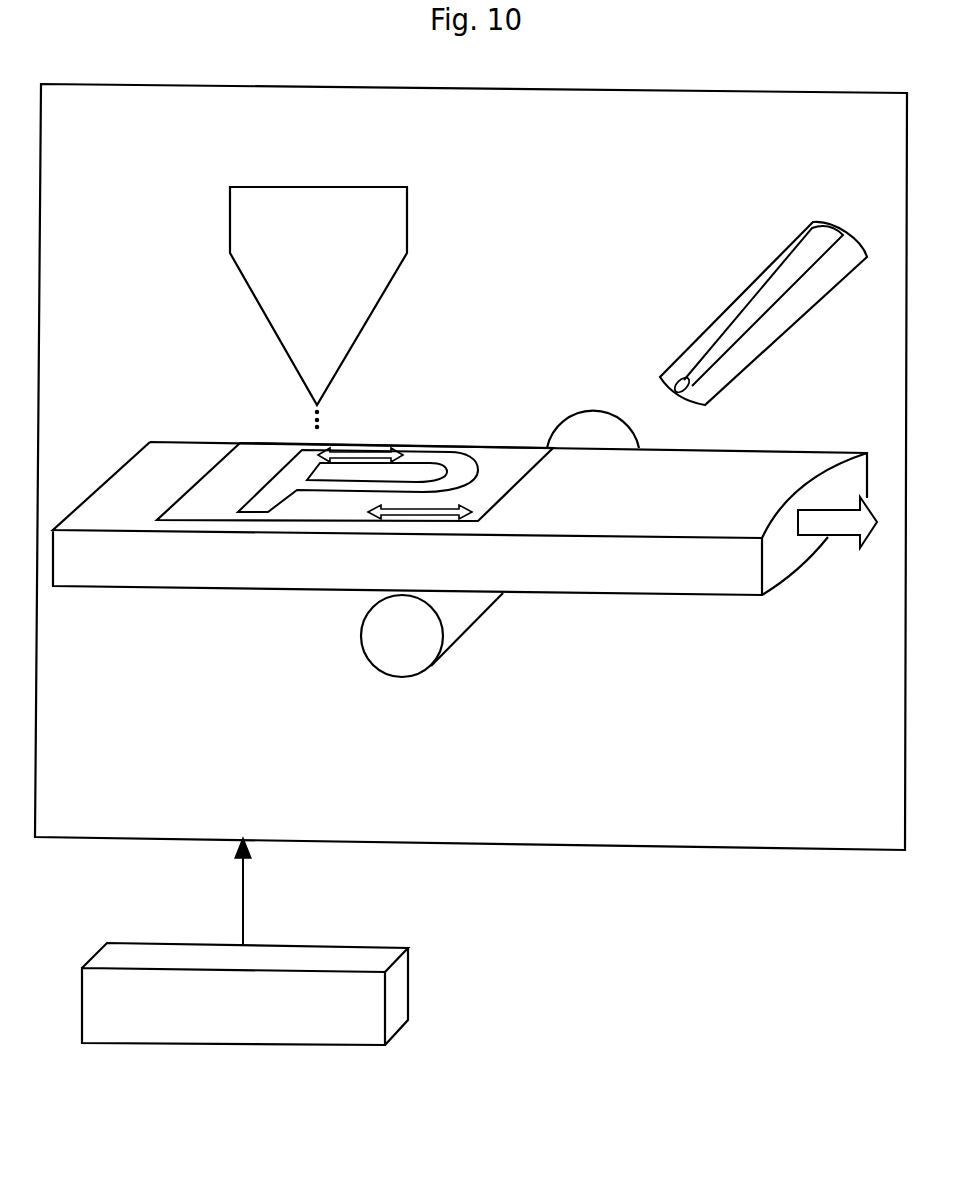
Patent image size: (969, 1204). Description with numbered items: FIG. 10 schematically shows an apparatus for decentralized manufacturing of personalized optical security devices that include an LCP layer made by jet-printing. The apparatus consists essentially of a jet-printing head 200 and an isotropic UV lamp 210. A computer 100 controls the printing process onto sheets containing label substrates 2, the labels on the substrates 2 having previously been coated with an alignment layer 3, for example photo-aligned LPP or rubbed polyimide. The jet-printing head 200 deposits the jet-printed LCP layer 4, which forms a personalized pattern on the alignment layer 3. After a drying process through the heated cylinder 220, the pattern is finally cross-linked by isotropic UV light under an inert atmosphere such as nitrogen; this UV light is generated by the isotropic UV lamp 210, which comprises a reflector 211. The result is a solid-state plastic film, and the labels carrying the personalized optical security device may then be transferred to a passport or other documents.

The jet-printing head 200 is at (390, 217).
The label substrate 2 is at (152, 577).
The alignment layer 3 is at (258, 459).
The jet-printed LCP layer 4 is at (457, 462).
The heated cylinder 220 is at (448, 625).
The isotropic UV lamp 210 is at (710, 355).
The reflector 211 is at (738, 300).
The computer 100 is at (265, 1022).